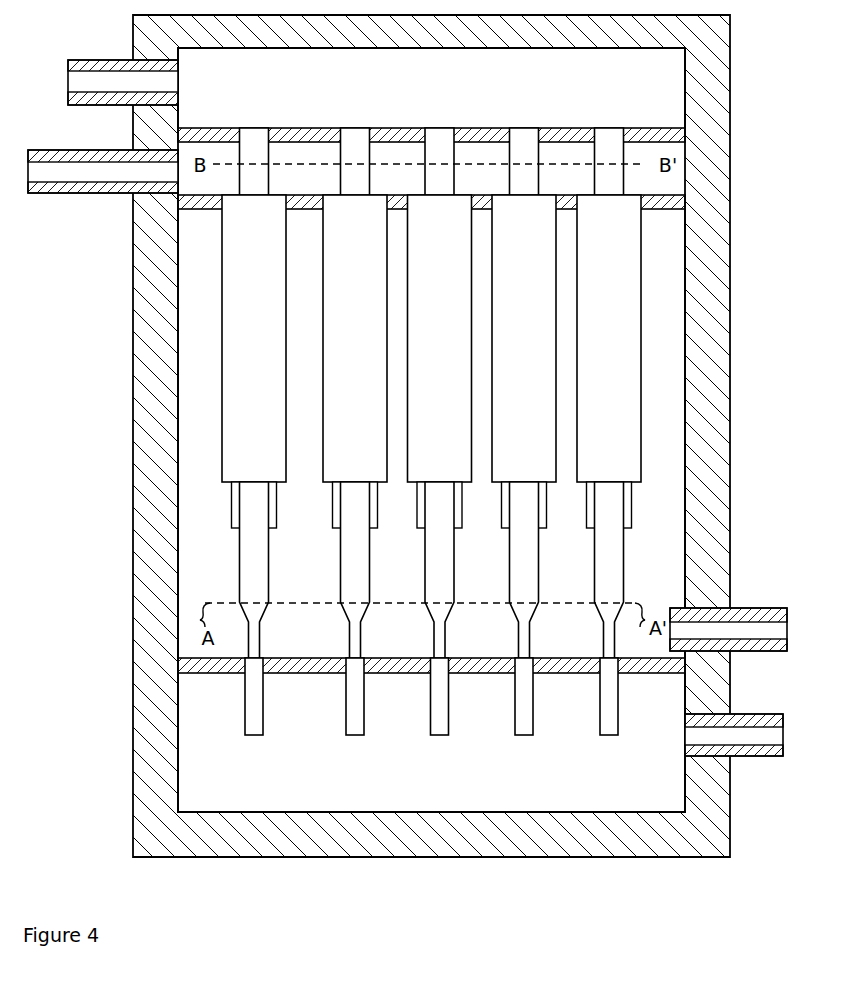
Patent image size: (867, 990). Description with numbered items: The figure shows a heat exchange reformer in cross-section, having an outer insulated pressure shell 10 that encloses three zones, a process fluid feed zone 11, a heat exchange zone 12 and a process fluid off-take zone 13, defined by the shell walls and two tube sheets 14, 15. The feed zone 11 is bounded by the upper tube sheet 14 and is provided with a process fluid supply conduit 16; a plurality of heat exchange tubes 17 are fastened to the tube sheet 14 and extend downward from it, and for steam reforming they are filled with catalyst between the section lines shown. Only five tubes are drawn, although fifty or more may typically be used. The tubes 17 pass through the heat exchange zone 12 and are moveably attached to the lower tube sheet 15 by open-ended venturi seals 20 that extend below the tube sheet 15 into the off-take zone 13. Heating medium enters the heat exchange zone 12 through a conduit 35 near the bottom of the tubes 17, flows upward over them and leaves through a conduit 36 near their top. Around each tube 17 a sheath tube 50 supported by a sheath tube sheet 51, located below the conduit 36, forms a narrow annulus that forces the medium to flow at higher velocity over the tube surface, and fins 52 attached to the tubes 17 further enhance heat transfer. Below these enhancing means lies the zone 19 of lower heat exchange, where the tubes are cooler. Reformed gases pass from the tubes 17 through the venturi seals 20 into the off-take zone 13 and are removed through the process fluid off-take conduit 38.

The outer insulated pressure shell 10 is at (710, 365).
The process fluid feed zone 11 is at (658, 92).
The heat exchange zone 12 is at (670, 298).
The process fluid off-take zone 13 is at (658, 759).
The tube sheet 14 is at (319, 135).
The tube sheet 15 is at (207, 667).
The process fluid supply conduit 16 is at (95, 68).
The heat exchange tubes 17 is at (436, 145).
The zone of lower heat exchange 19 is at (225, 603).
The venturi seals 20 is at (438, 703).
The conduit 35 is at (754, 610).
The conduit 36 is at (60, 185).
The process fluid off-take conduit 38 is at (759, 720).
The sheath tube 50 is at (253, 382).
The sheath tube sheet 51 is at (195, 202).
The fins 52 is at (230, 508).